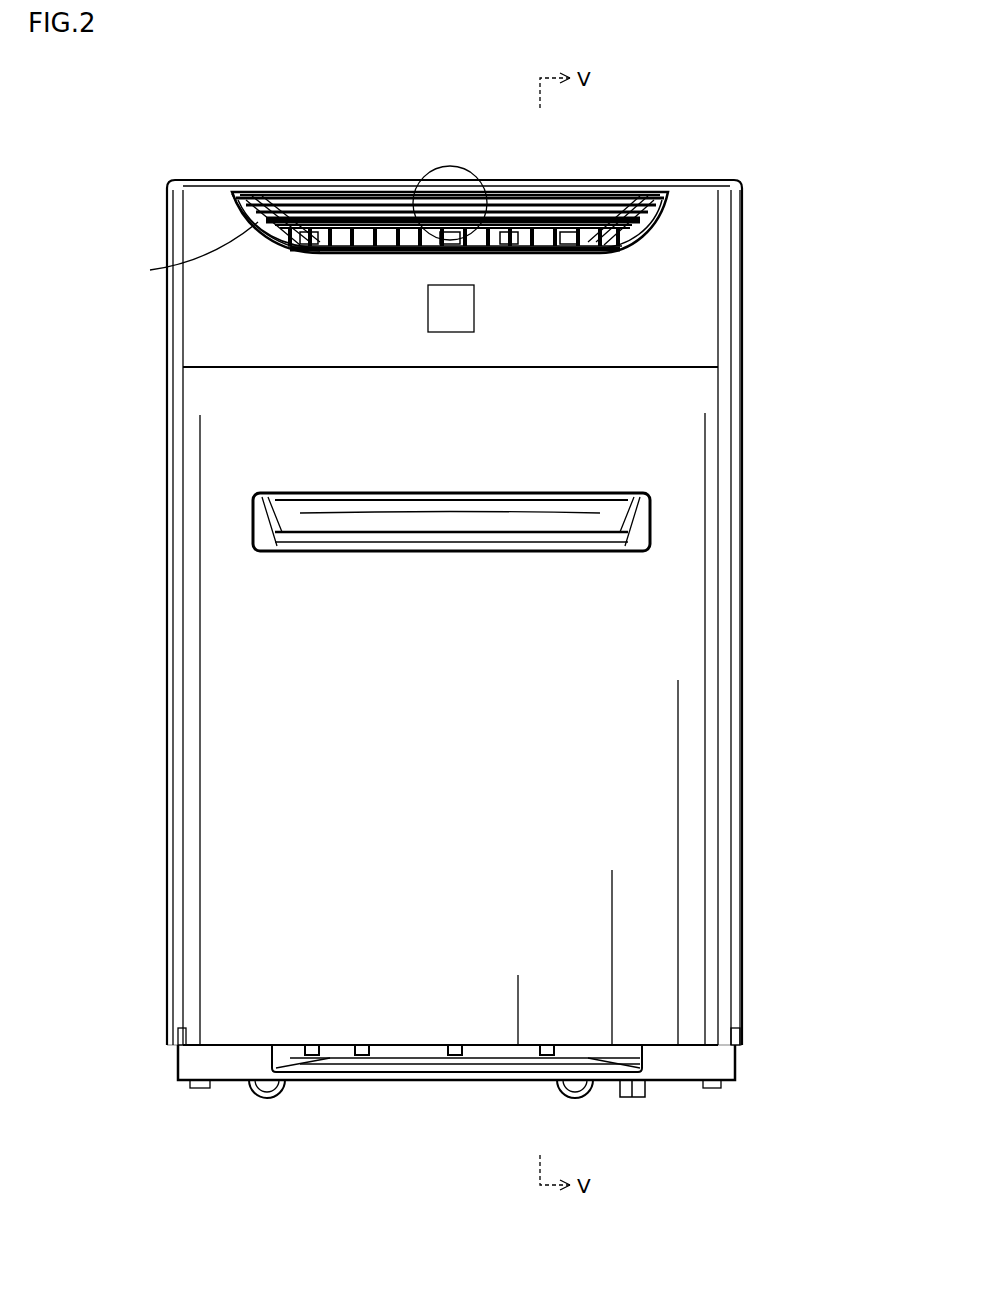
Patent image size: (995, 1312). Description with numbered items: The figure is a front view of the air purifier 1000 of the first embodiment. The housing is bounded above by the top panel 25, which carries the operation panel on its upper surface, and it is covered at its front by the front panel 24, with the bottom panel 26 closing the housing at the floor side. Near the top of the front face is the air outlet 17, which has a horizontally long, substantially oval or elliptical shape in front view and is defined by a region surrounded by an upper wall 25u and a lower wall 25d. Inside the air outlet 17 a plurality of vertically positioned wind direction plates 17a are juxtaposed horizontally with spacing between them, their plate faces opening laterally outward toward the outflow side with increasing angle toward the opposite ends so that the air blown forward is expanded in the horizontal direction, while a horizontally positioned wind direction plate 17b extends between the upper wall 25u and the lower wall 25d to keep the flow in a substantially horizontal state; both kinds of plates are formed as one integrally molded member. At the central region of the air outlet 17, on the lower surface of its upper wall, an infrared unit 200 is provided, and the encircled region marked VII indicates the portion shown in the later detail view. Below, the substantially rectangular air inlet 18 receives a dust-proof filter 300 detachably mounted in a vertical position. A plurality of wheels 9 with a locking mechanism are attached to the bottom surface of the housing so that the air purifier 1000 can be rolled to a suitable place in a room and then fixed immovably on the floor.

The top panel 25 is at (379, 210).
The upper wall 25u is at (283, 212).
The lower wall 25d is at (258, 222).
The air outlet 17 is at (548, 220).
The vertically positioned wind direction plates 17a is at (328, 218).
The horizontally positioned wind direction plate 17b is at (516, 220).
The infrared unit 200 is at (458, 205).
The section VII is at (432, 180).
The air inlet 18 is at (575, 510).
The dust-proof filter 300 is at (305, 512).
The front panel 24 is at (710, 398).
The bottom panel 26 is at (232, 1062).
The wheels 9 is at (278, 1095).
The air purifier 1000 is at (736, 1123).